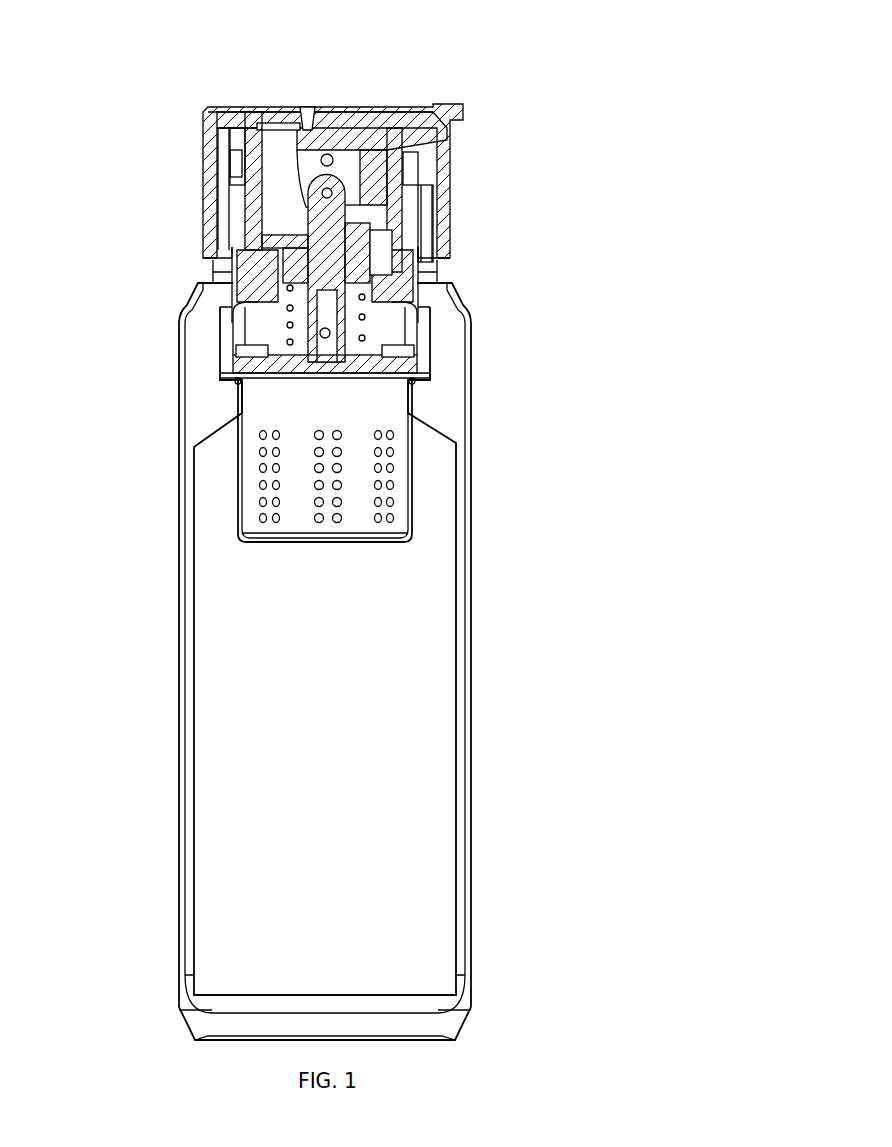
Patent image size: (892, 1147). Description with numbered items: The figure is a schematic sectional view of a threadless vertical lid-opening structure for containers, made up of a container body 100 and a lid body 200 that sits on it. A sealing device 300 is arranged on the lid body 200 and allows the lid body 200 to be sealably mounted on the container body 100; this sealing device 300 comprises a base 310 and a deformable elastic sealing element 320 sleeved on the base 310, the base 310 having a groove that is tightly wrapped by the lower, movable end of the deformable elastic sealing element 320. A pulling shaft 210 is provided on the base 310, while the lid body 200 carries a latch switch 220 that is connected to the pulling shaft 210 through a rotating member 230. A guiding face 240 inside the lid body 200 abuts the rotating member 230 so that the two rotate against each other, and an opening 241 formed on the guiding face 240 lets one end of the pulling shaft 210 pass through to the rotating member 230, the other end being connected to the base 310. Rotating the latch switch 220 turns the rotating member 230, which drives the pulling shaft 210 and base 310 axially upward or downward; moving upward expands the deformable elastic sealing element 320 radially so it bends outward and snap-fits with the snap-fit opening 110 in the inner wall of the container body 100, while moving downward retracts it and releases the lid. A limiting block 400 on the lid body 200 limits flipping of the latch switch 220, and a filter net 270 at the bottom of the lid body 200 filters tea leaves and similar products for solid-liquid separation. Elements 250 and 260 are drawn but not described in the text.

The container body 100 is at (467, 647).
The snap-fit opening 110 is at (225, 323).
The lid body 200 is at (378, 103).
The pulling shaft 210 is at (395, 250).
The latch switch 220 is at (420, 123).
The rotating member 230 is at (348, 170).
The guiding face 240 is at (410, 210).
The opening 241 is at (305, 221).
The guide 250 is at (252, 132).
The elastic member 260 is at (290, 272).
The filter net 270 is at (265, 415).
The sealing device 300 is at (422, 350).
The base 310 is at (395, 365).
The deformable elastic sealing element 320 is at (400, 318).
The limiting block 400 is at (297, 117).